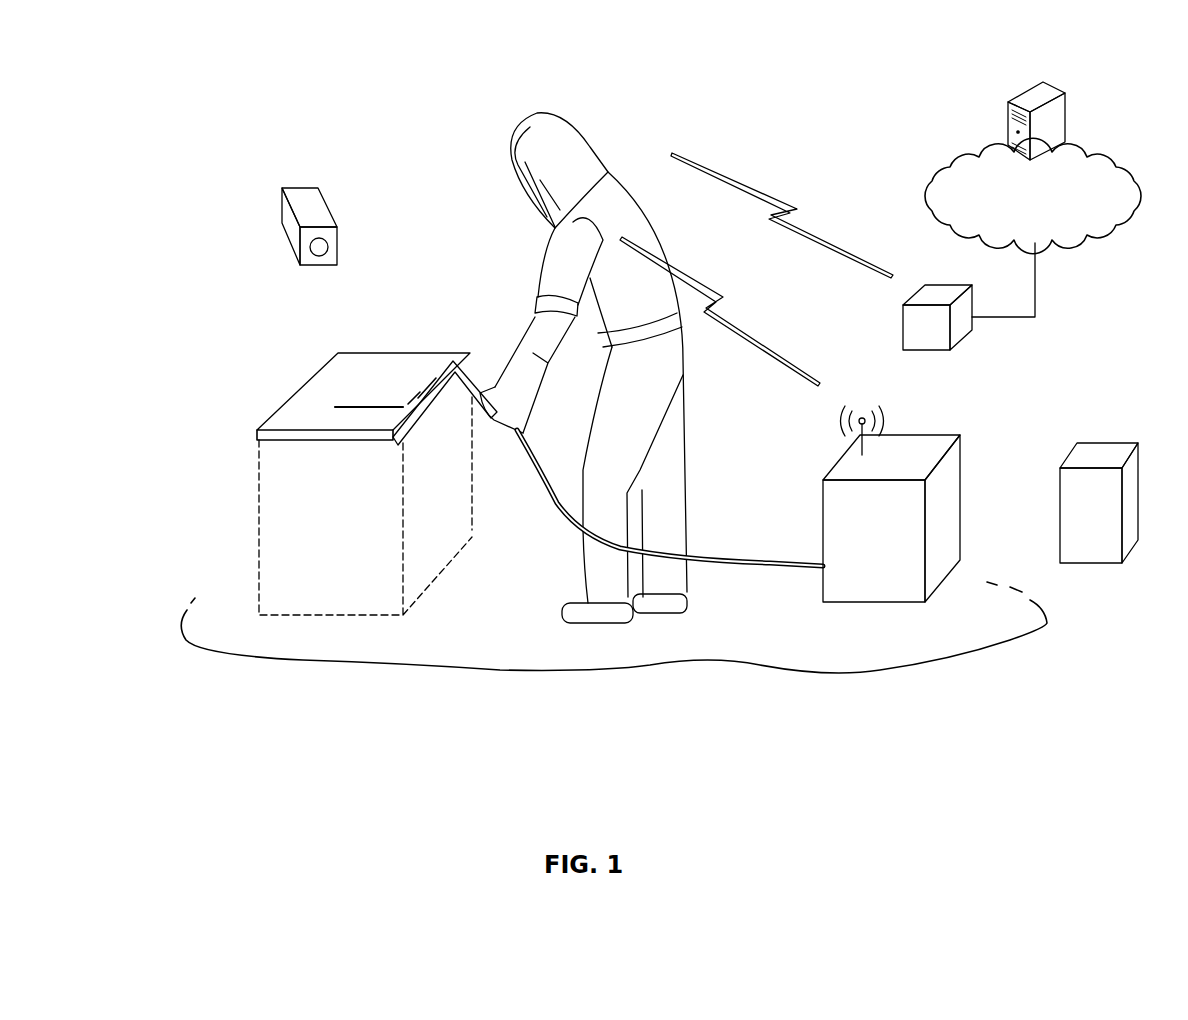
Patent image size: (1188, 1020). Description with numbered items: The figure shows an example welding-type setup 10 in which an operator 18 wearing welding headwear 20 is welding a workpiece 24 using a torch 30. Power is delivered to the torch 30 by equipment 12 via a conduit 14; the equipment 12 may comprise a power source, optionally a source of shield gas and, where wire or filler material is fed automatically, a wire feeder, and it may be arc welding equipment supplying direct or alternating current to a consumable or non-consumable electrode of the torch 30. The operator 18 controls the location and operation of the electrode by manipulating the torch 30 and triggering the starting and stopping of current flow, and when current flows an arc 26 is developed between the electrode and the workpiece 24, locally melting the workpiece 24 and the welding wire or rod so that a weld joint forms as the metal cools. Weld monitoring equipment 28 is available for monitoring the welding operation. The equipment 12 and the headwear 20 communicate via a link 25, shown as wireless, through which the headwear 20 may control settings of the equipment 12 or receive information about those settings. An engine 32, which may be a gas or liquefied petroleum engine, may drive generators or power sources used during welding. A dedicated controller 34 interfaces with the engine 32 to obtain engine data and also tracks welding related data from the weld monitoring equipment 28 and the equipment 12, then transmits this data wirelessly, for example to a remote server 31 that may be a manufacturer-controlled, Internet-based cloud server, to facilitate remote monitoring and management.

The welding-type setup 10 is at (843, 129).
The equipment 12 is at (903, 443).
The conduit 14 is at (723, 557).
The operator 18 is at (662, 221).
The welding headwear 20 is at (574, 112).
The workpiece 24 is at (327, 380).
The link 25 is at (723, 298).
The arc 26 is at (400, 397).
The weld monitoring equipment 28 is at (303, 188).
The torch 30 is at (478, 392).
The remote server 31 is at (1065, 117).
The engine 32 is at (1097, 566).
The controller 34 is at (950, 283).